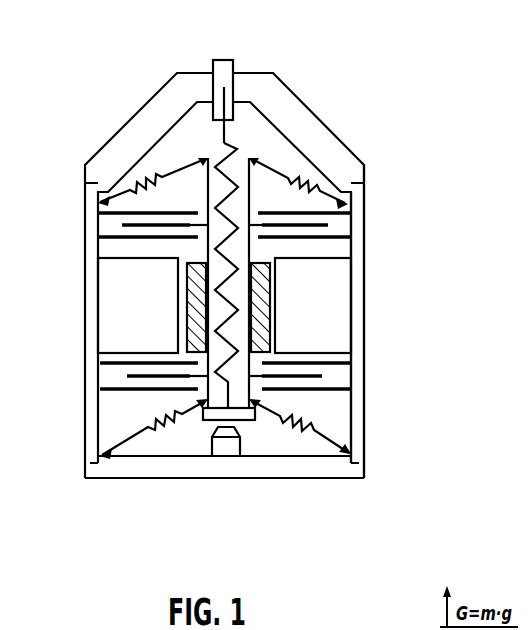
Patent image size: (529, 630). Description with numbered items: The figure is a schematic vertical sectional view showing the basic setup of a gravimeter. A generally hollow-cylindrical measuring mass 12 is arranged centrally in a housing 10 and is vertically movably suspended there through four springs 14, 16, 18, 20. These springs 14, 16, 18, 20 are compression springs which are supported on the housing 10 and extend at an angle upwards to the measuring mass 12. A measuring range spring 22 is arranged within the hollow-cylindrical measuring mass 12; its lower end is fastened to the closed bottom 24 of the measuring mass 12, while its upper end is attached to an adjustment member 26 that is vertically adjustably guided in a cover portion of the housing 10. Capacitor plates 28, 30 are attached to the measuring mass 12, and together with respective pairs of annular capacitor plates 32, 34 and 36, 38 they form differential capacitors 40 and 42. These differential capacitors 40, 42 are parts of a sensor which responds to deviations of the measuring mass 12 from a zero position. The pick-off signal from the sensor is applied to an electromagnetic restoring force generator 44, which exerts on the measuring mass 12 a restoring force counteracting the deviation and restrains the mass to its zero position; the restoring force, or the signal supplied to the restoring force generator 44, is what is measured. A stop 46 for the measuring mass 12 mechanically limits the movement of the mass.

The housing 10 is at (332, 148).
The measuring mass 12 is at (252, 255).
The spring 14 is at (160, 175).
The spring 16 is at (288, 168).
The spring 18 is at (153, 418).
The spring 20 is at (307, 418).
The measuring range spring 22 is at (244, 302).
The closed bottom 24 is at (243, 418).
The adjustment member 26 is at (222, 63).
The capacitor plate 28 is at (323, 230).
The capacitor plate 30 is at (302, 373).
The annular capacitor plate 32 is at (368, 187).
The annular capacitor plate 34 is at (120, 238).
The annular capacitor plate 36 is at (117, 362).
The annular capacitor plate 38 is at (110, 390).
The differential capacitor 40 is at (372, 211).
The differential capacitor 42 is at (342, 376).
The electromagnetic restoring force generator 44 is at (338, 292).
The stop 46 is at (225, 447).